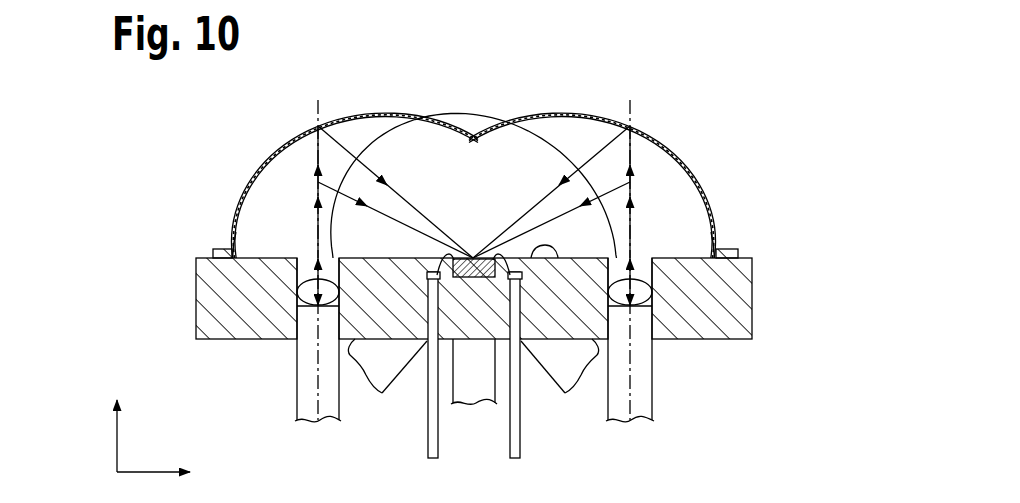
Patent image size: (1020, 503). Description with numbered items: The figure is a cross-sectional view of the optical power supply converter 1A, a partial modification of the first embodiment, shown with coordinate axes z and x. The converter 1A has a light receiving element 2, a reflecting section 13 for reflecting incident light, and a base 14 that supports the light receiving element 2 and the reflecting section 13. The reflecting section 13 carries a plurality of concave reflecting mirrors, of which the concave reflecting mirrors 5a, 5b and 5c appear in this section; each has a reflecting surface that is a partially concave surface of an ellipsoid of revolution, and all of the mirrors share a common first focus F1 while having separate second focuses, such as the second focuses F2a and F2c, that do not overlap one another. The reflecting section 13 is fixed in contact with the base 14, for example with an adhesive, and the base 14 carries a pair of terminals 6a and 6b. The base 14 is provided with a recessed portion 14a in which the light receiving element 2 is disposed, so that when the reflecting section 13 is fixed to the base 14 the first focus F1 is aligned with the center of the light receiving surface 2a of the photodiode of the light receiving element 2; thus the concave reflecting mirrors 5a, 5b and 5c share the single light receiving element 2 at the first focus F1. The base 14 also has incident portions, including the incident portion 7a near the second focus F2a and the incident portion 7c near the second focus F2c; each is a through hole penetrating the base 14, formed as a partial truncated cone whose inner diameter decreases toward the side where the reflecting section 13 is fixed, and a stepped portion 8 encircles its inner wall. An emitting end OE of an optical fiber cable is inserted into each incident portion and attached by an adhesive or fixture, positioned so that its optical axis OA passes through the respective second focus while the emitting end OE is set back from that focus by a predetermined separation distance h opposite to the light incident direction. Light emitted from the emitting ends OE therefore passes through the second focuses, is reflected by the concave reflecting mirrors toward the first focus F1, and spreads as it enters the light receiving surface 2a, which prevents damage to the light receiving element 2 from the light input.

The optical power supply converter 1A is at (206, 132).
The light receiving element 2 is at (452, 262).
The light receiving surface 2a is at (396, 190).
The concave reflecting mirror 5a is at (673, 161).
The concave reflecting mirror 5b is at (526, 126).
The concave reflecting mirror 5c is at (286, 158).
The terminal 6a is at (523, 448).
The terminal 6b is at (427, 448).
The incident portion 7a is at (637, 257).
The incident portion 7c is at (233, 247).
The stepped portion 8 is at (300, 290).
The reflecting section 13 is at (226, 248).
The base 14 is at (197, 306).
The recessed portion 14a is at (537, 251).
The first focus F1 is at (473, 257).
The second focus F2a is at (634, 257).
The second focus F2c is at (313, 257).
The separation distance h is at (342, 262).
The optical axis OA is at (318, 381).
The emitting end OE is at (291, 314).
The z axis z is at (115, 433).
The x axis x is at (152, 470).